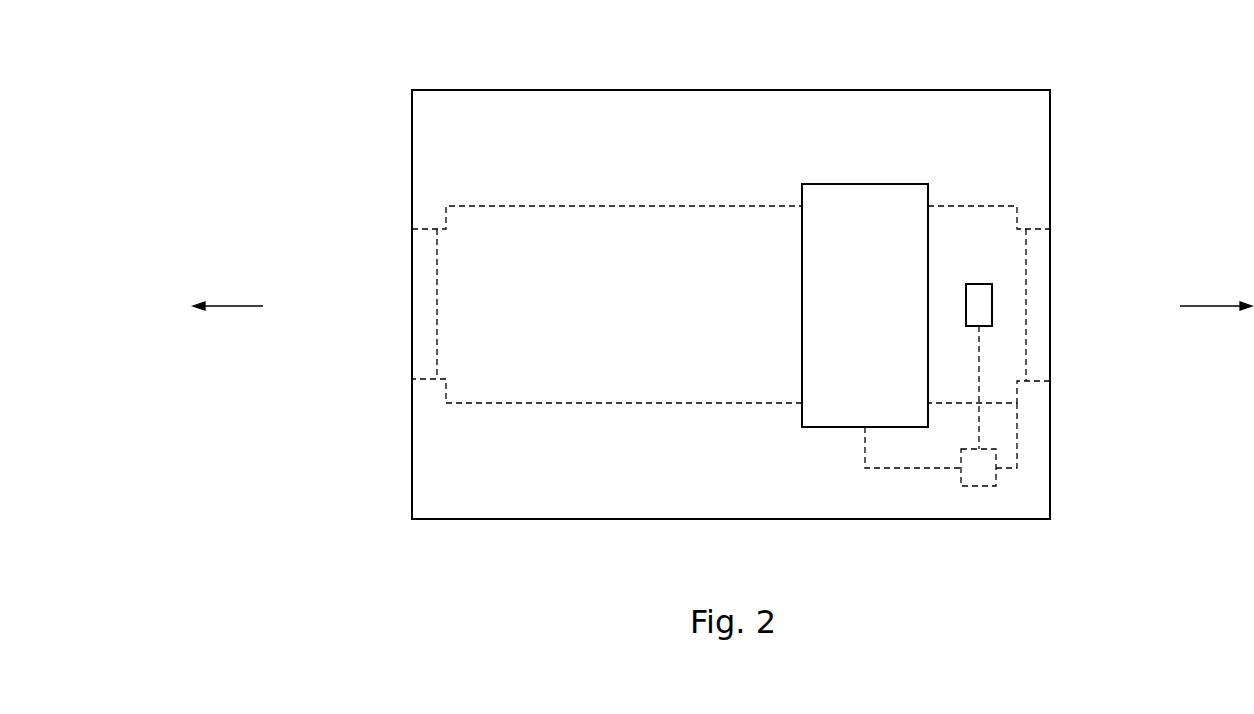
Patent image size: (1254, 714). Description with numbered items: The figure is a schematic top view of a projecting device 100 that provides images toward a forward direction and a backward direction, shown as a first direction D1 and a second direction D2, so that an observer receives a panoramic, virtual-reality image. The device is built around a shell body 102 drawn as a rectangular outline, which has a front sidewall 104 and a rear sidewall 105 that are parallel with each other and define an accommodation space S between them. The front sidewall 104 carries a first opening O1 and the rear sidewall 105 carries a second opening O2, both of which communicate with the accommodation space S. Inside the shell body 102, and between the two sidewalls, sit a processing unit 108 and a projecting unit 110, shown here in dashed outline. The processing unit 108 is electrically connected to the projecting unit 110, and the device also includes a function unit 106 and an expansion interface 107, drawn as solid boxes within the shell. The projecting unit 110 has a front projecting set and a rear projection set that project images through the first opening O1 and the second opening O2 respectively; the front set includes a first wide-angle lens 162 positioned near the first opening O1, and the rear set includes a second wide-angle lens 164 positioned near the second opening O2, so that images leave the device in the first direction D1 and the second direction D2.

The projecting device 100 is at (336, 32).
The shell body 102 is at (1037, 120).
The front sidewall 104 is at (1050, 417).
The rear sidewall 105 is at (415, 417).
The function unit 106 is at (979, 292).
The expansion interface 107 is at (870, 193).
The processing unit 108 is at (975, 486).
The projecting unit 110 is at (586, 206).
The first wide-angle lens 162 is at (1043, 307).
The second wide-angle lens 164 is at (418, 307).
The first opening O1 is at (1050, 267).
The second opening O2 is at (412, 266).
The accommodation space S is at (572, 488).
The first direction D1 is at (1205, 307).
The second direction D2 is at (237, 307).